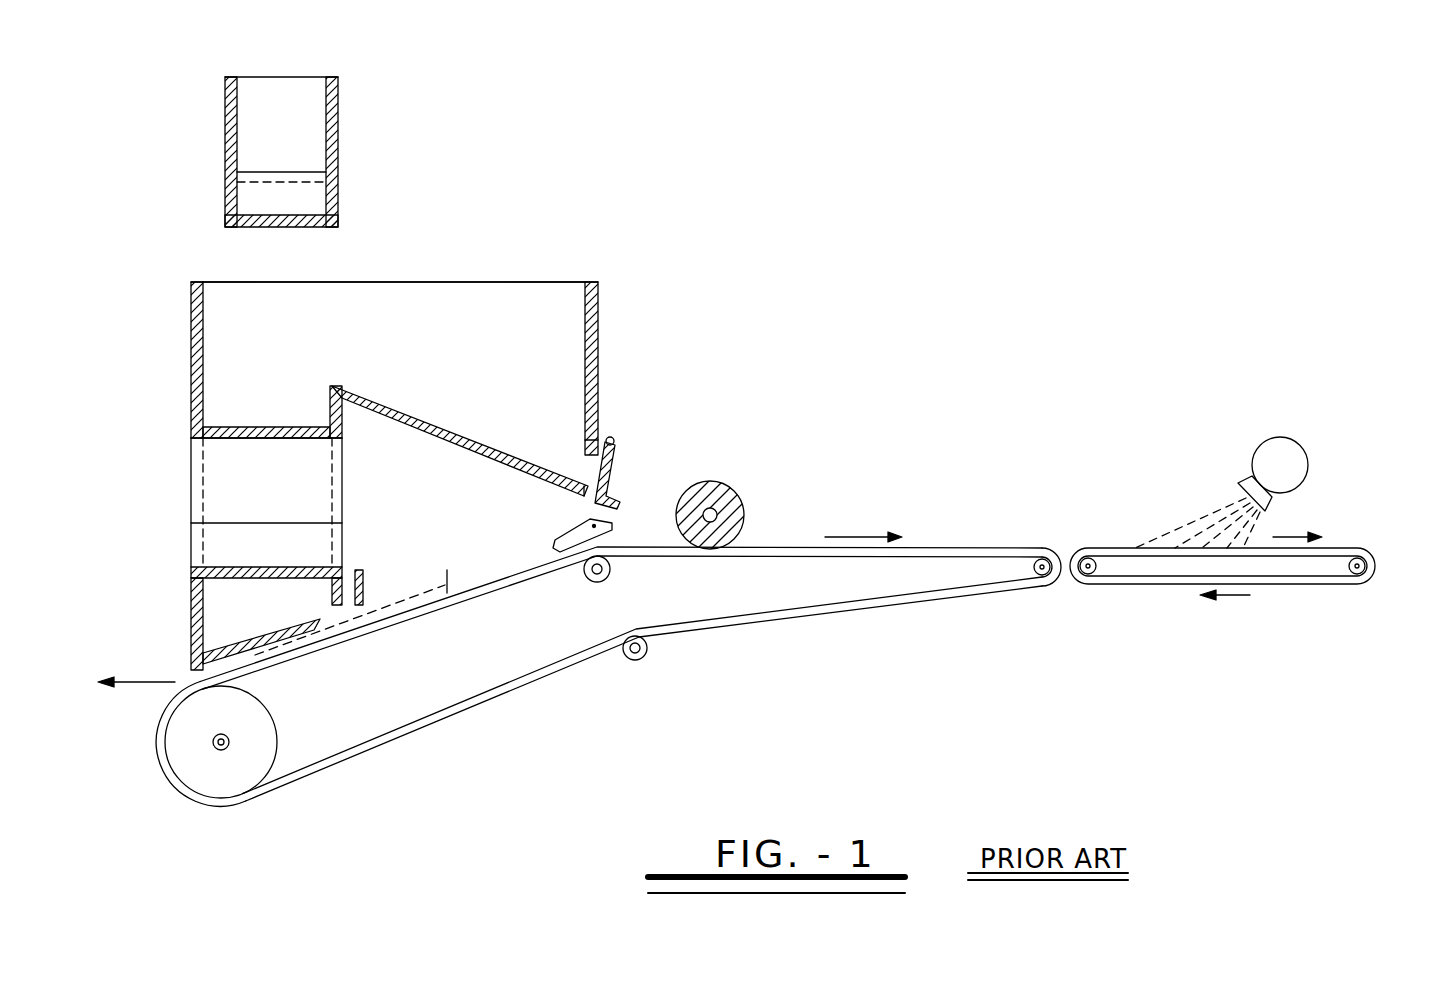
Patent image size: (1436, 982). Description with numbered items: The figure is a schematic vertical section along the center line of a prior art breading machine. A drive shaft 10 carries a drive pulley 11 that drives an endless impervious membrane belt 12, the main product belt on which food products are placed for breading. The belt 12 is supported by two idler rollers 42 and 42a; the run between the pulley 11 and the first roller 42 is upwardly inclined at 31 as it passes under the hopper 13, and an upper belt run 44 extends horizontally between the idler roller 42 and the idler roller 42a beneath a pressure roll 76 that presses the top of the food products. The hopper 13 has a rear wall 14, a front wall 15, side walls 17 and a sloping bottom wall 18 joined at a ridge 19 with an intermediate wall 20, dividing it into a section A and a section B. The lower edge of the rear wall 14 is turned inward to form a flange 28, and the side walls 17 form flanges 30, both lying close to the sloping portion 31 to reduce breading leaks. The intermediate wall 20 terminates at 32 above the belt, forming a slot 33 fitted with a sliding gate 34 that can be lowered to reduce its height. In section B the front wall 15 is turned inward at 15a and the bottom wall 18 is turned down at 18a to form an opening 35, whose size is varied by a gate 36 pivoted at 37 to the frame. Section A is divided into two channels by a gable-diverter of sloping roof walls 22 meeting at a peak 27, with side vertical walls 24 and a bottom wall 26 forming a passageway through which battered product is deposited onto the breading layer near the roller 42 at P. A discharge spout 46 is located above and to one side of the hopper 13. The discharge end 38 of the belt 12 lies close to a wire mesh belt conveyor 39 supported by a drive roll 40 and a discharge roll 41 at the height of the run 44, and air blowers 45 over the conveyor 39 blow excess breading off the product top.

The drive shaft 10 is at (210, 742).
The drive pulley 11 is at (205, 775).
The endless impervious membrane belt 12 is at (433, 722).
The hopper 13 is at (612, 320).
The rear wall 14 is at (190, 377).
The front wall 15 is at (598, 372).
The inwardly and downwardly turned portion of front wall 15a is at (585, 452).
The side walls 17 is at (430, 300).
The sloping bottom wall 18 is at (445, 432).
The downwardly turned portion of bottom wall 18a is at (582, 490).
The ridge 19 is at (337, 386).
The intermediate wall 20 is at (344, 500).
The sloping roof walls 22 is at (240, 490).
The side vertical walls 24 is at (235, 550).
The bottom wall 26 is at (267, 568).
The peak or ridge 27 is at (253, 428).
The flange 28 is at (190, 642).
The flanges 30 is at (262, 640).
The upwardly inclined belt portion 31 is at (445, 630).
The bottom of intermediate wall 32 is at (332, 607).
The slot 33 is at (368, 610).
The sliding gate 34 is at (367, 575).
The opening 35 is at (574, 456).
The gate 36 is at (620, 478).
The pivot 37 is at (622, 440).
The discharge end 38 is at (1063, 538).
The wire mesh belt conveyor 39 is at (1350, 548).
The drive roll 40 is at (1092, 572).
The discharge roll 41 is at (1357, 580).
The idler roller 42 is at (595, 582).
The idler roller 42a is at (1042, 586).
The upper belt run 44 is at (755, 557).
The air blowers 45 is at (1190, 520).
The discharge spout 46 is at (338, 160).
The roll 76 is at (740, 495).
The hopper section A is at (228, 302).
The hopper section B is at (567, 298).
The product deposit location P is at (545, 565).